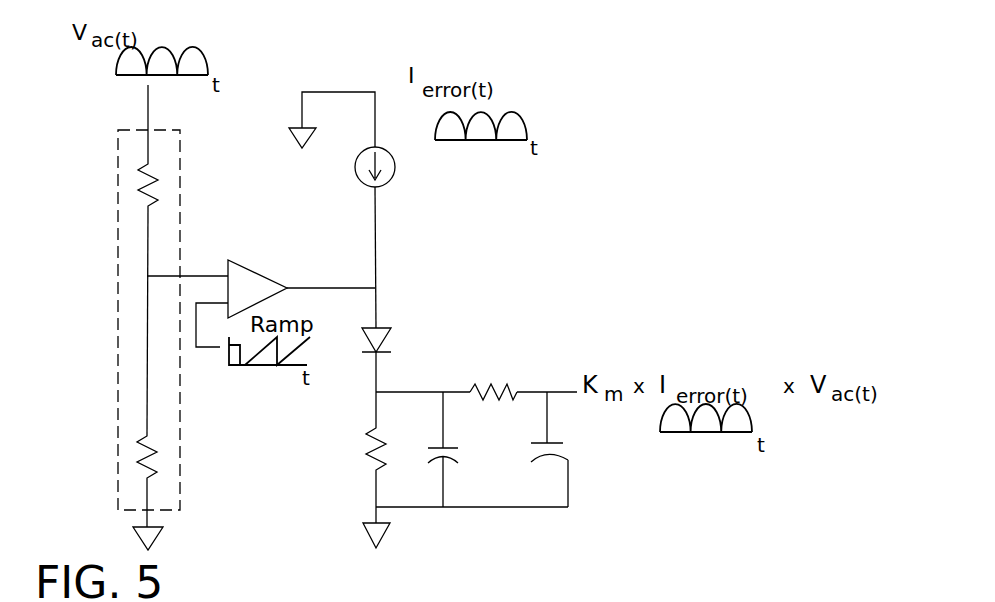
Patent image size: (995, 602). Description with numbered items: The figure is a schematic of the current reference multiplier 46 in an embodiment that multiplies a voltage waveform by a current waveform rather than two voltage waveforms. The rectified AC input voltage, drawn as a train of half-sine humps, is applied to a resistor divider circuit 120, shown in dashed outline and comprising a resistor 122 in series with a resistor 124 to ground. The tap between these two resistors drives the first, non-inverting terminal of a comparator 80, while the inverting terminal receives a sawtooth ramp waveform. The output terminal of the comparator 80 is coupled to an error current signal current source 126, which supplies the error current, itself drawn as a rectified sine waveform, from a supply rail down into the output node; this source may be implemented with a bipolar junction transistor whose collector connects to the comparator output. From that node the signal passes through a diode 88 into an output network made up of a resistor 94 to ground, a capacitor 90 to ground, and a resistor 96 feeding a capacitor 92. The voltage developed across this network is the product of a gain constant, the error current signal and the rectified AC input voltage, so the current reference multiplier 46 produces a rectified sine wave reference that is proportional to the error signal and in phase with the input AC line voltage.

The current reference multiplier 46 is at (557, 64).
The comparator 80 is at (258, 272).
The diode 88 is at (382, 343).
The capacitor 90 is at (448, 458).
The capacitor 92 is at (545, 458).
The resistor 94 is at (376, 450).
The resistor 96 is at (497, 380).
The resistor divider circuit 120 is at (155, 317).
The resistor 122 is at (148, 205).
The resistor 124 is at (148, 470).
The error current signal current source 126 is at (392, 178).